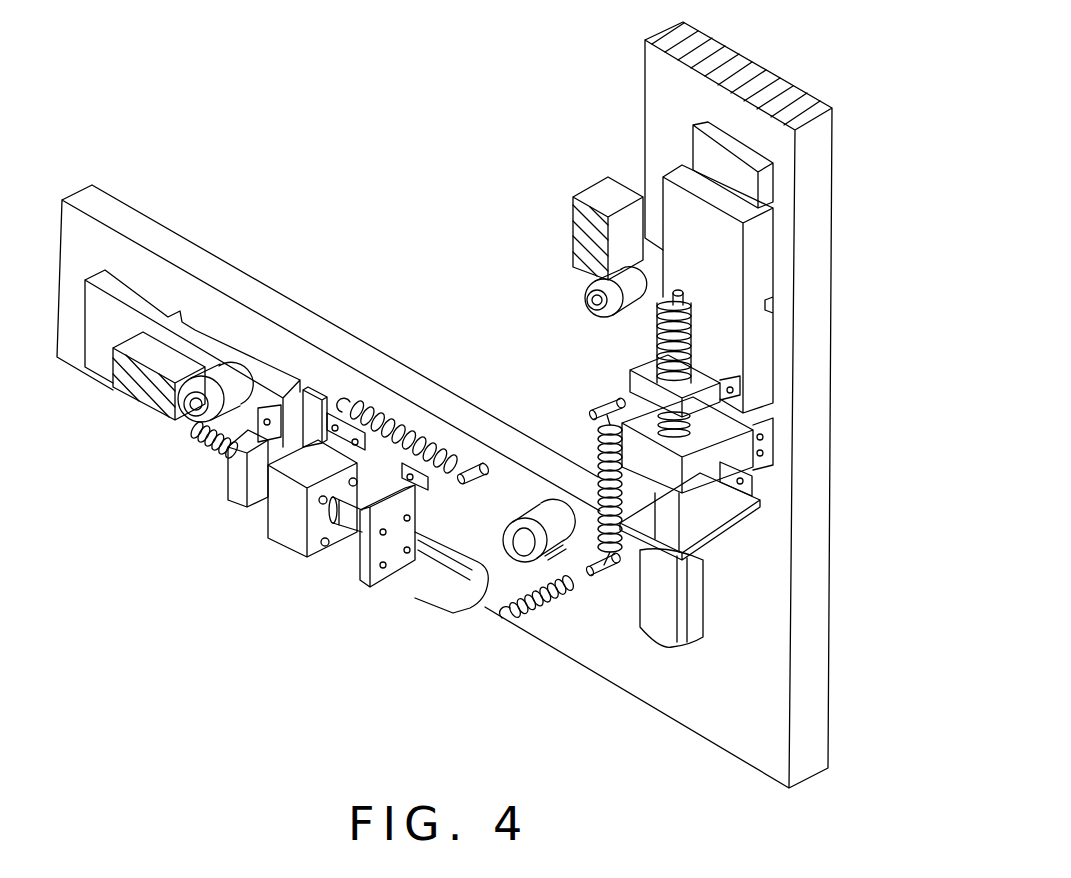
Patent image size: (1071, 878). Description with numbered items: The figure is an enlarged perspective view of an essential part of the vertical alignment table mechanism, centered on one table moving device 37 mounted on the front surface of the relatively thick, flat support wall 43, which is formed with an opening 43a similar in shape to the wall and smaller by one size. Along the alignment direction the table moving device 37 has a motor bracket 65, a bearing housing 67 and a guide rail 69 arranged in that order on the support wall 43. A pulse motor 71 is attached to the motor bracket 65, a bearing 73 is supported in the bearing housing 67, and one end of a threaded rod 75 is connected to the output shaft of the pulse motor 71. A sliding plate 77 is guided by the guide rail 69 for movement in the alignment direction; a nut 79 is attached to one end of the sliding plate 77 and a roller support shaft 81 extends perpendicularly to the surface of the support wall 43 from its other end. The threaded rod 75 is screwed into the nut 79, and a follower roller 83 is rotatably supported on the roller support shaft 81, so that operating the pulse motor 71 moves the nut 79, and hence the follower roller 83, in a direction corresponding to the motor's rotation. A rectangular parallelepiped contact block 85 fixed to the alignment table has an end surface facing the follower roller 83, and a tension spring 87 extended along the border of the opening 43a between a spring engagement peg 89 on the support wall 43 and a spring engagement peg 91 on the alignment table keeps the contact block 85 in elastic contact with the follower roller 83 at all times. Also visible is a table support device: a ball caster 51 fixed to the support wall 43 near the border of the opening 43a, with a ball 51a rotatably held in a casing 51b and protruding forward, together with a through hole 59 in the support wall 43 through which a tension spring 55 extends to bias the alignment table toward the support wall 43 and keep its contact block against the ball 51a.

The table moving device 37 is at (216, 497).
The support wall 43 is at (658, 88).
The opening 43a is at (422, 144).
The ball caster 51 is at (543, 503).
The ball 51a is at (527, 567).
The casing 51b is at (510, 503).
The tension spring 55 is at (507, 627).
The through hole 59 is at (553, 610).
The motor bracket 65 is at (362, 577).
The bearing housing 67 is at (282, 530).
The guide rail 69 is at (313, 392).
The pulse motor 71 is at (420, 580).
The bearing 73 is at (332, 508).
The threaded rod 75 is at (210, 450).
The sliding plate 77 is at (155, 300).
The nut 79 is at (238, 492).
The roller support shaft 81 is at (196, 406).
The follower roller 83 is at (215, 378).
The contact block 85 is at (132, 387).
The tension spring 87 is at (390, 410).
The spring engagement peg 89 is at (482, 463).
The spring engagement peg 91 is at (597, 412).